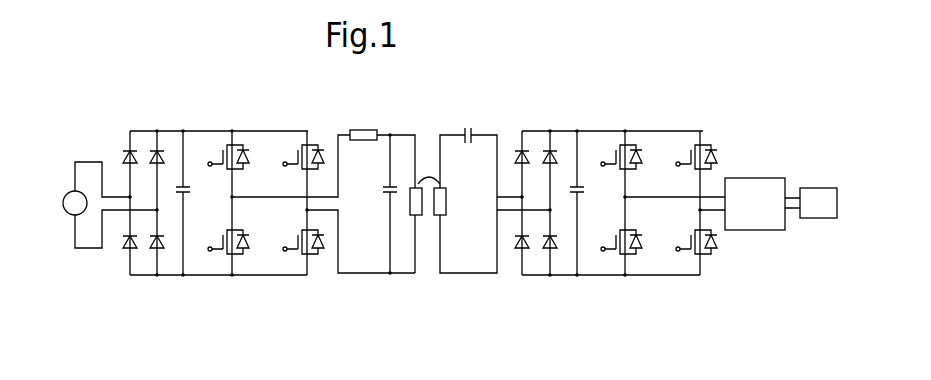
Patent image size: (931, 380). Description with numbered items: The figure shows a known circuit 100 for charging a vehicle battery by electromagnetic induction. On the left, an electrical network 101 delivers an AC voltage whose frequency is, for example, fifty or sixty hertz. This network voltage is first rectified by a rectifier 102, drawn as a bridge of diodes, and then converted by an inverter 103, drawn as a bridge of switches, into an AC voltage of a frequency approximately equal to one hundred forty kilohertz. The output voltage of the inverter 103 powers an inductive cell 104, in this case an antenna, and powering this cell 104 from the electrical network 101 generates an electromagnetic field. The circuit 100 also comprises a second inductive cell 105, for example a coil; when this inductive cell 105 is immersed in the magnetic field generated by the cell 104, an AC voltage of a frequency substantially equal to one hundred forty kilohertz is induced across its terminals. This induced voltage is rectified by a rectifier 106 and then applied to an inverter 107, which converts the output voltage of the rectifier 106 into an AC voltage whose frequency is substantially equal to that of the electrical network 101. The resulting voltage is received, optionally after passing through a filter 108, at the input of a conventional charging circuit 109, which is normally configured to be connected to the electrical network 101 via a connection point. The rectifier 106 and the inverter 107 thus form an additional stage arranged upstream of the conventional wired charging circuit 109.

The circuit 100 is at (433, 287).
The electrical network 101 is at (423, 115).
The rectifier 102 is at (130, 283).
The inverter 103 is at (220, 283).
The inductive cell 104 is at (410, 203).
The inductive cell 105 is at (446, 197).
The rectifier 106 is at (522, 120).
The inverter 107 is at (623, 120).
The filter 108 is at (750, 178).
The charging circuit 109 is at (828, 188).